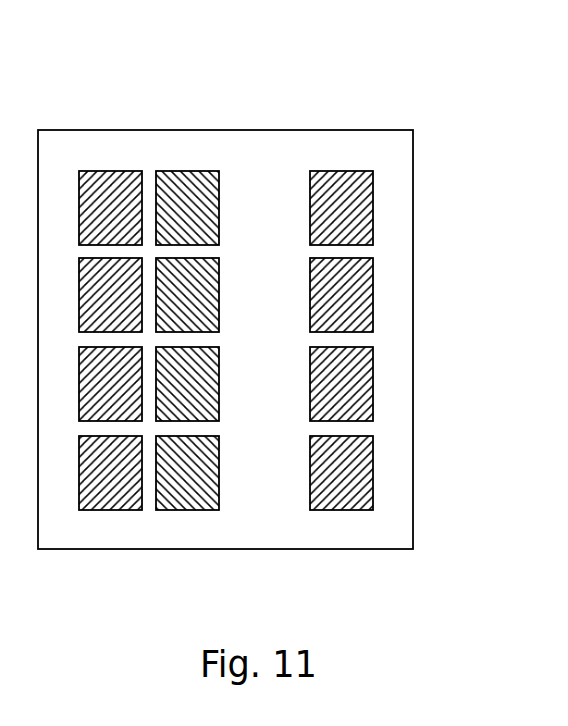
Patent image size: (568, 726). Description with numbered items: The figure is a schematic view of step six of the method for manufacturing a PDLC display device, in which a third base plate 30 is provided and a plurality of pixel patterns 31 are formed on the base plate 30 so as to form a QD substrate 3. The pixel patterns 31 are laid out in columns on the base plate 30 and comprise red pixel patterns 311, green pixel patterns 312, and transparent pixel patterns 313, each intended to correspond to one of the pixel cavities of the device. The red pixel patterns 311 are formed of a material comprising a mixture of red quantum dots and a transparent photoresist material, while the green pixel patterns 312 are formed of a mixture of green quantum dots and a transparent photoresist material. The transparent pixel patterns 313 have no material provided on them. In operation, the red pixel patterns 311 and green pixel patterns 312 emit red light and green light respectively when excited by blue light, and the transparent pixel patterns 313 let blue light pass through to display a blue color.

The QD substrate 3 is at (267, 339).
The third base plate 30 is at (390, 197).
The pixel patterns 31 is at (217, 259).
The red pixel patterns 311 is at (115, 193).
The green pixel patterns 312 is at (197, 193).
The transparent pixel patterns 313 is at (265, 292).